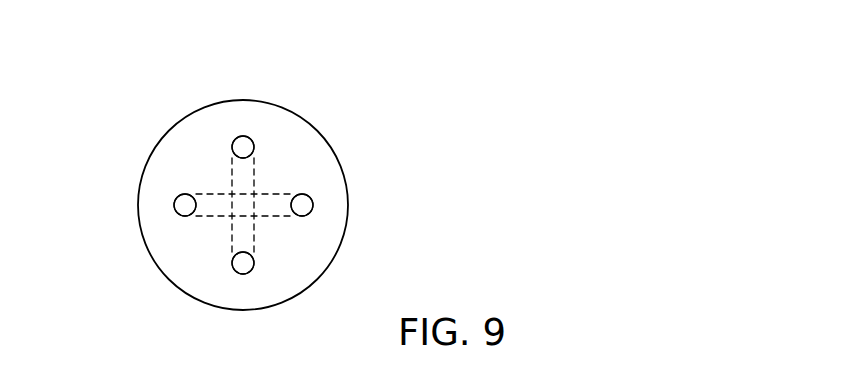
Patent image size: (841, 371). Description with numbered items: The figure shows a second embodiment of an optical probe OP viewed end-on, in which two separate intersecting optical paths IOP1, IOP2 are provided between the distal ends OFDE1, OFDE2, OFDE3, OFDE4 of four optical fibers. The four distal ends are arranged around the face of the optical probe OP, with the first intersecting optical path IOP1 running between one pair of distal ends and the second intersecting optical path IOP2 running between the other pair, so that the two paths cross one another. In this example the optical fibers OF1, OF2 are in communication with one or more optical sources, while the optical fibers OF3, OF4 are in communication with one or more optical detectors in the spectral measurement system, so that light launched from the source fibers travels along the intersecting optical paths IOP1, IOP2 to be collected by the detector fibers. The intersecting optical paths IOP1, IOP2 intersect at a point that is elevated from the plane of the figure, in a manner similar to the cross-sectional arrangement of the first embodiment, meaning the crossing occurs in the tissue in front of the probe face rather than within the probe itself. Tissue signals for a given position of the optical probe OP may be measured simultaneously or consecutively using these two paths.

The optical probe OP is at (247, 100).
The optical fiber OF1 is at (245, 147).
The optical fiber OF2 is at (304, 205).
The optical fiber OF3 is at (243, 265).
The optical fiber OF4 is at (183, 207).
The optical fiber distal end OFDE1 is at (253, 145).
The optical fiber distal end OFDE2 is at (313, 206).
The optical fiber distal end OFDE3 is at (247, 273).
The optical fiber distal end OFDE4 is at (173, 208).
The intersecting optical path IOP1 is at (255, 183).
The intersecting optical path IOP2 is at (275, 217).